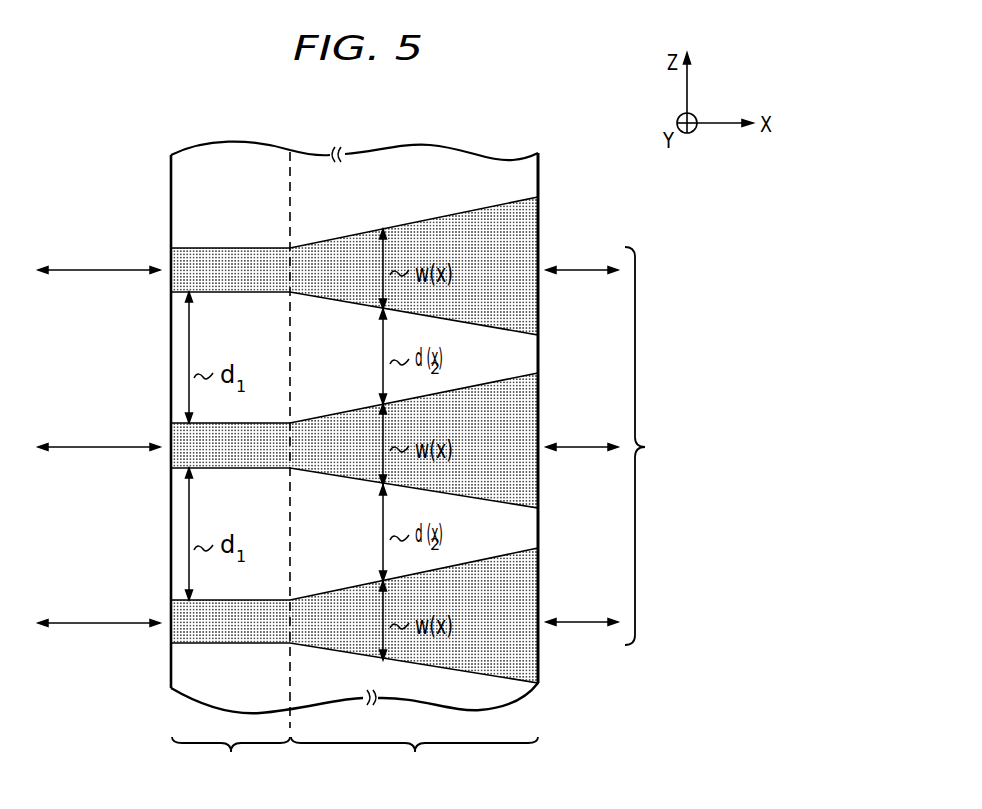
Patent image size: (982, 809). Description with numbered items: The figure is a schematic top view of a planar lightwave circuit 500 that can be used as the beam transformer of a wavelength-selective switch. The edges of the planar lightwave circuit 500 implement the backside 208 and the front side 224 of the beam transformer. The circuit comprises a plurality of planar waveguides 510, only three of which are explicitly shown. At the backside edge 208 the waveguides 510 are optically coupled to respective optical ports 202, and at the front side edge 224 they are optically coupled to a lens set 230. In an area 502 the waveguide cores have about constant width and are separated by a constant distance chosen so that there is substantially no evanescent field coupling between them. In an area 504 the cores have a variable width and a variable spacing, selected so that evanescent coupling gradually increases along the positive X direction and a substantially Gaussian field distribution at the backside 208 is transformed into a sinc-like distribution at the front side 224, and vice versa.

The planar lightwave circuit 500 is at (375, 98).
The backside edge 208 is at (165, 151).
The front side edge 224 is at (550, 176).
The planar waveguides 510 is at (213, 296).
The optical ports 202 is at (99, 620).
The lens set 230 is at (642, 446).
The area of constant waveguide width 502 is at (231, 761).
The area of variable waveguide width 504 is at (414, 761).